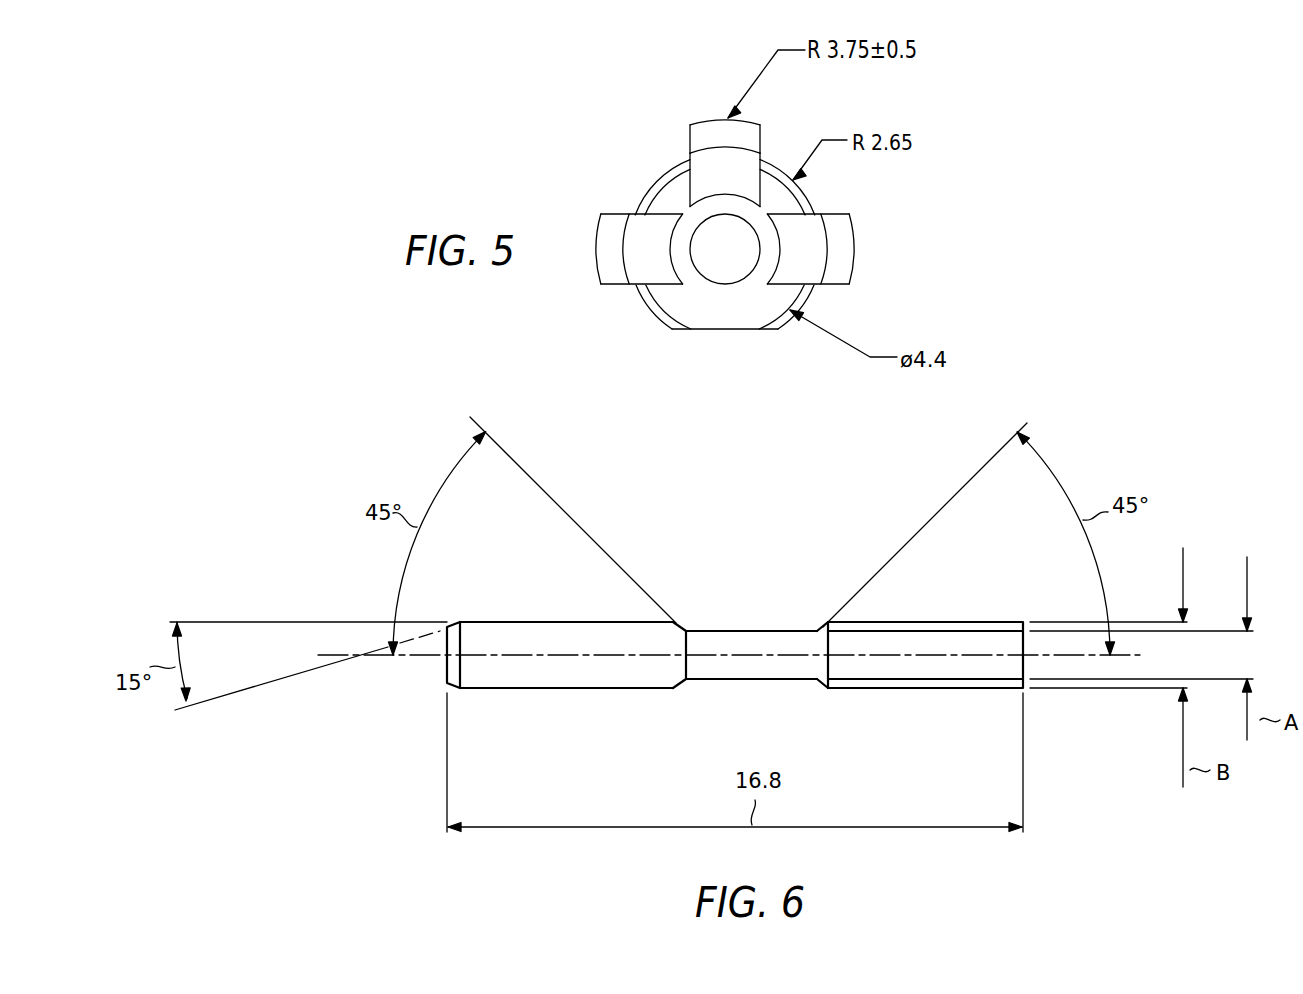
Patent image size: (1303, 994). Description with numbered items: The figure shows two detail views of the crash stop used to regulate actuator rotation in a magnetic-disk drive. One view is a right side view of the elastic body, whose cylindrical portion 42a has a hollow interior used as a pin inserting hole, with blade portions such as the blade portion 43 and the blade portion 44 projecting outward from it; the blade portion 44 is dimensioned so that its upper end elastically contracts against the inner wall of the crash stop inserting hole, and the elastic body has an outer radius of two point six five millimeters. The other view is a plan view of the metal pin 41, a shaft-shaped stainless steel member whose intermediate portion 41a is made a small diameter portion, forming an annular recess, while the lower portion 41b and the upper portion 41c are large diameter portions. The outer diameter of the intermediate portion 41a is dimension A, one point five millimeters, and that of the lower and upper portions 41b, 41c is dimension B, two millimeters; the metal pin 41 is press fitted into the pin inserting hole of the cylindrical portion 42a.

In FIG. 6, the metal pin 41 is at (729, 684).
In FIG. 6, the intermediate portion 41a is at (770, 637).
In FIG. 6, the lower portion 41b is at (558, 680).
In FIG. 5, the upper portion 41c is at (732, 277).
In FIG. 6, the upper portion 41c is at (960, 635).
In FIG. 5, the cylindrical portion 42a is at (702, 323).
In FIG. 5, the blade portion 43 is at (702, 170).
In FIG. 5, the blade portion 44 is at (708, 123).